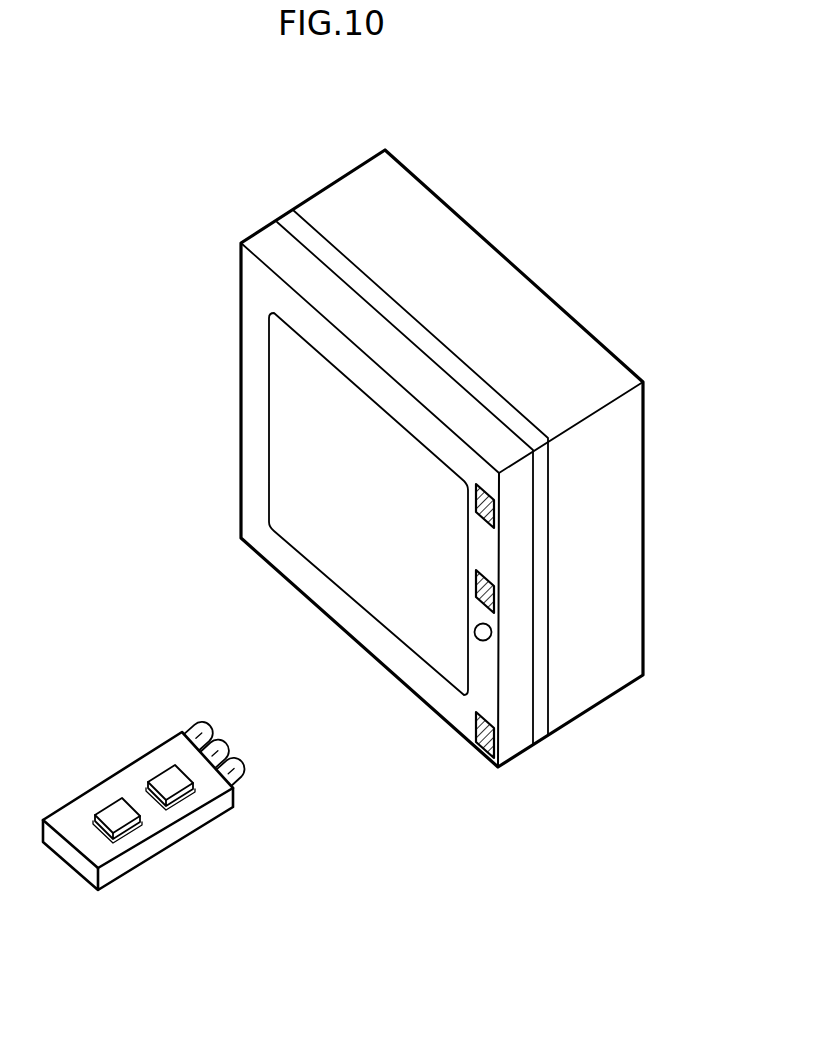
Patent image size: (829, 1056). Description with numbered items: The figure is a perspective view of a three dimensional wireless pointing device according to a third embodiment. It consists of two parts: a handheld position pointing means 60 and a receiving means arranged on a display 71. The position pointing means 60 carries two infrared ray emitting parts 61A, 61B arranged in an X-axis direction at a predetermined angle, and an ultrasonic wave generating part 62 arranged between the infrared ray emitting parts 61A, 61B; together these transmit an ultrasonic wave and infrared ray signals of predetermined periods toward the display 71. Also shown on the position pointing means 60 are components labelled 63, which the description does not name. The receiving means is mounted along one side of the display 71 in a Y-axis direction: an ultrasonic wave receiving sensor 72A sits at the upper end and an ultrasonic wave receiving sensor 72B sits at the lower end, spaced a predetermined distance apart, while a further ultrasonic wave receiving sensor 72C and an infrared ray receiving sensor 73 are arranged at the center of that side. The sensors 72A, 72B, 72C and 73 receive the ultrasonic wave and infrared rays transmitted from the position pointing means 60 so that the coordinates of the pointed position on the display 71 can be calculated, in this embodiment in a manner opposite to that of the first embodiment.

The position pointing means 60 is at (70, 820).
The infrared ray emitting part 61A is at (196, 730).
The infrared ray emitting part 61B is at (246, 779).
The ultrasonic wave generating part 62 is at (212, 742).
The semiconductor chips 63 is at (173, 777).
The display 71 is at (645, 530).
The ultrasonic wave receiving sensor 72A is at (490, 507).
The ultrasonic wave receiving sensor 72B is at (493, 738).
The ultrasonic wave receiving sensor 72C is at (490, 595).
The infrared ray receiving sensor 73 is at (483, 632).